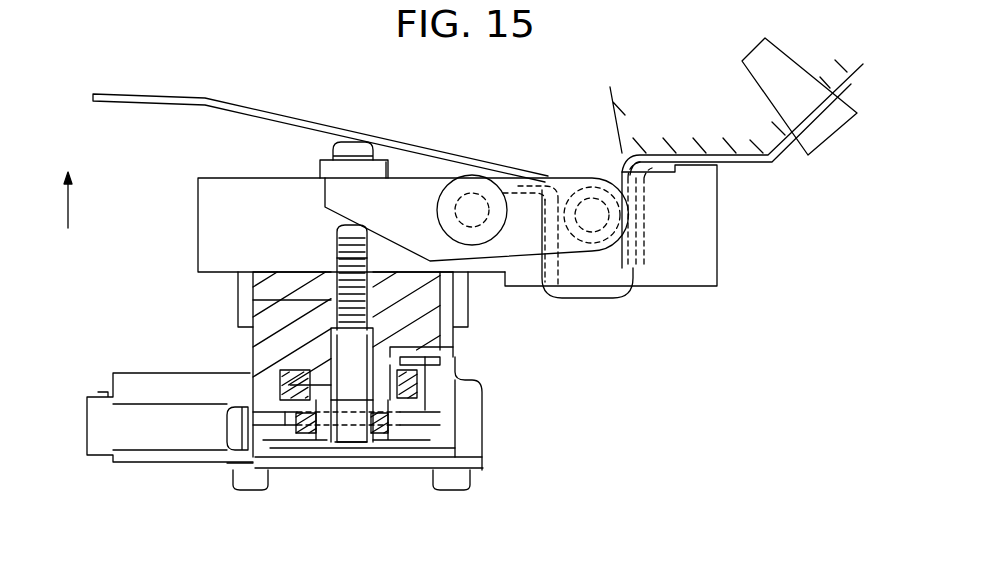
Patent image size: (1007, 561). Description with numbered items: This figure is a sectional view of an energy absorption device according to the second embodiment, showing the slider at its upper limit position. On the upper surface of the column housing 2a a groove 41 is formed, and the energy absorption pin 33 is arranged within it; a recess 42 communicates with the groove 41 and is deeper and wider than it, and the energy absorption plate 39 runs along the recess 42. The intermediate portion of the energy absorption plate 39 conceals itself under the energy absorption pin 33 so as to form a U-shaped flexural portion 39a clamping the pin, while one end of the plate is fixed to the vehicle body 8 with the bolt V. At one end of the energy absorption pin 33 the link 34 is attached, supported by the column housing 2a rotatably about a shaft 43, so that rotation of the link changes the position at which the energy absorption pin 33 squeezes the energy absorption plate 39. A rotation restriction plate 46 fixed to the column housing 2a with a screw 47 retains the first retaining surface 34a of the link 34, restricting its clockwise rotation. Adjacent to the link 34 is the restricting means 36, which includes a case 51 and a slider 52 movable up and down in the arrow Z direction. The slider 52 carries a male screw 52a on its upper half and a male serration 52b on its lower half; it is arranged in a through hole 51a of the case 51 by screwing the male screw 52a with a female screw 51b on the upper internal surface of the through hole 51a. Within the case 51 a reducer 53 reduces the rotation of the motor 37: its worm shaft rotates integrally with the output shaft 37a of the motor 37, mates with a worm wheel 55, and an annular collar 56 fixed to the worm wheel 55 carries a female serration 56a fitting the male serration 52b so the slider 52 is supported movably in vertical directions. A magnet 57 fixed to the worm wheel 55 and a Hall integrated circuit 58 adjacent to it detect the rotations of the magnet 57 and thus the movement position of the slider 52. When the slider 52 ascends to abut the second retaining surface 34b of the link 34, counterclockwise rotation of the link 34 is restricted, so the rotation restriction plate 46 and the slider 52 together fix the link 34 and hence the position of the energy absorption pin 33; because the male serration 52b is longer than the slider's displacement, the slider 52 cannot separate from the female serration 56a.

The column housing 2a is at (207, 202).
The vehicle body 8 is at (692, 113).
The energy absorption pin 33 is at (592, 200).
The link 34 is at (332, 195).
The first retaining surface 34a is at (384, 168).
The second retaining surface 34b is at (468, 283).
The restricting means 36 is at (237, 312).
The motor 37 is at (140, 462).
The output shaft 37a is at (285, 465).
The energy absorption plate 39 is at (258, 108).
The U-shaped flexural portion 39a is at (593, 250).
The groove 41 is at (560, 188).
The recess 42 is at (627, 268).
The shaft 43 is at (437, 213).
The rotation restriction plate 46 is at (320, 170).
The screw 47 is at (348, 146).
The case 51 is at (262, 355).
The through hole 51a is at (365, 447).
The female screw 51b is at (337, 298).
The slider 52 is at (337, 240).
The male screw 52a is at (337, 258).
The male serration 52b is at (333, 348).
The reducer 53 is at (438, 430).
The worm wheel 55 is at (405, 447).
The annular collar 56 is at (333, 453).
The female serration 56a is at (347, 447).
The magnet 57 is at (427, 387).
The Hall integrated circuit 58 is at (437, 348).
The bolt V is at (830, 125).
The arrow Z direction Z is at (66, 187).